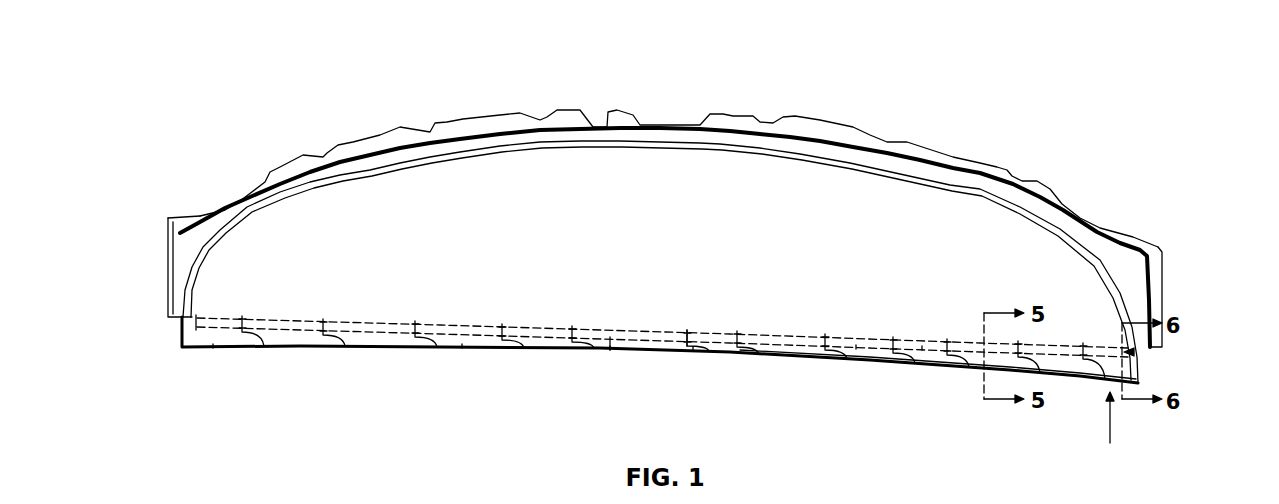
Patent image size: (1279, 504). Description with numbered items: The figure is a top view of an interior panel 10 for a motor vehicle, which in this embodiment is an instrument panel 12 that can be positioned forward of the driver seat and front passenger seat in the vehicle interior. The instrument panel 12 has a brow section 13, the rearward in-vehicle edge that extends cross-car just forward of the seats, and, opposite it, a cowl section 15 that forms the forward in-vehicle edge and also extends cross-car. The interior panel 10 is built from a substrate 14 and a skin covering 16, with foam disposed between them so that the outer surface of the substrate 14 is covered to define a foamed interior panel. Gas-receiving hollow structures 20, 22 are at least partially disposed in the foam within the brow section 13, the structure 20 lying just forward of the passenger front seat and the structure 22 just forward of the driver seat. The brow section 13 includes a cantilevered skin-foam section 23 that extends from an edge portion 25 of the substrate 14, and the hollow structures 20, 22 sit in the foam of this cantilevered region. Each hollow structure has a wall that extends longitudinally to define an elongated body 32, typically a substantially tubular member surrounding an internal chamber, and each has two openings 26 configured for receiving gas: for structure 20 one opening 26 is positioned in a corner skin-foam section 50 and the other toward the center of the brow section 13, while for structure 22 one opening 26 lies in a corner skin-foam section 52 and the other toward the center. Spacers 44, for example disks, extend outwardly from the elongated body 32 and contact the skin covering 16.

The interior panel 10 is at (1019, 78).
The instrument panel 12 is at (1081, 121).
The brow section 13 is at (377, 349).
The substrate 14 is at (460, 337).
The cowl section 15 is at (812, 140).
The skin covering 16 is at (388, 195).
The gas-receiving hollow structure 20 is at (693, 350).
The gas-receiving hollow structure 22 is at (199, 325).
The cantilevered skin-foam section 23 is at (1065, 363).
The edge portion 25 is at (363, 323).
The opening 26 is at (199, 325).
The elongated body 32 is at (922, 348).
The spacer 44 is at (243, 334).
The corner skin-foam section 50 is at (1168, 365).
The corner skin-foam section 52 is at (172, 330).